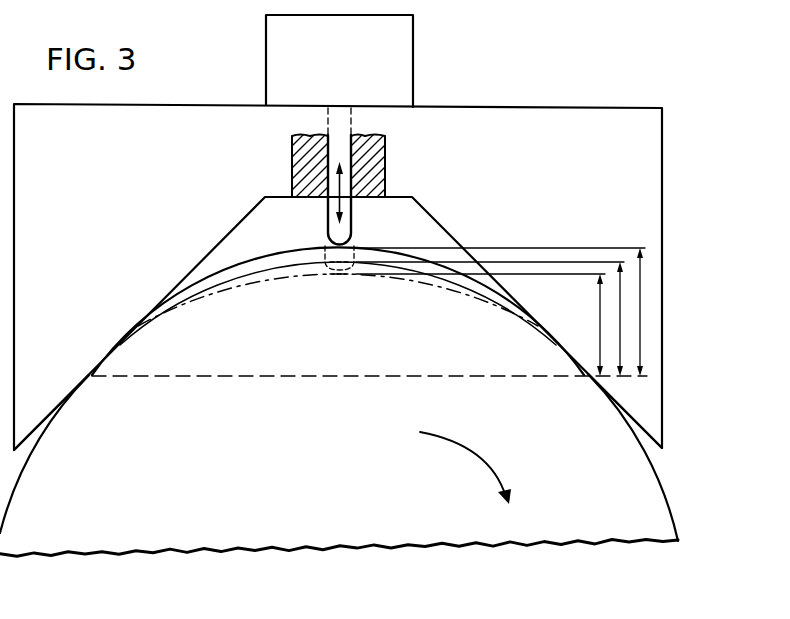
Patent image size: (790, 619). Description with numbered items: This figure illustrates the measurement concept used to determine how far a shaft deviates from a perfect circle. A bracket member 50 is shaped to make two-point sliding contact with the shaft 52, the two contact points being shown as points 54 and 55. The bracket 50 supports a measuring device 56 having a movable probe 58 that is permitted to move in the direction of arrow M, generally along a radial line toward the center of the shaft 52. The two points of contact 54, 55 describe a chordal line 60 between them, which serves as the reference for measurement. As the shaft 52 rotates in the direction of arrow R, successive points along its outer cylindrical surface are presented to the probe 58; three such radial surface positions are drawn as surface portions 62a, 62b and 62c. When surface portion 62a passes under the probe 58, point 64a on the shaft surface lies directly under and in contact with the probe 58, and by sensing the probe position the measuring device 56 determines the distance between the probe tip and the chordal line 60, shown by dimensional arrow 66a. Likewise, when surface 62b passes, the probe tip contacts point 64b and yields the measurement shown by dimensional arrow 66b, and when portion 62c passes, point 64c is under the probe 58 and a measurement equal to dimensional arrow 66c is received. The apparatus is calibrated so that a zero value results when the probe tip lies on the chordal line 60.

The bracket member 50 is at (588, 79).
The shaft 52 is at (125, 546).
The point of contact 54 is at (93, 379).
The point of contact 55 is at (585, 381).
The measuring device 56 is at (400, 62).
The movable probe 58 is at (327, 224).
The chordal line 60 is at (357, 379).
The surface position 62a is at (283, 252).
The surface position 62b is at (267, 270).
The surface position 62c is at (158, 323).
The point on shaft surface 64a is at (351, 240).
The point on shaft surface 64b is at (343, 263).
The point on shaft surface 64c is at (349, 266).
The dimensional arrow 66a is at (640, 298).
The dimensional arrow 66b is at (621, 345).
The dimensional arrow 66c is at (600, 318).
The arrow M is at (338, 180).
The arrow R is at (452, 450).